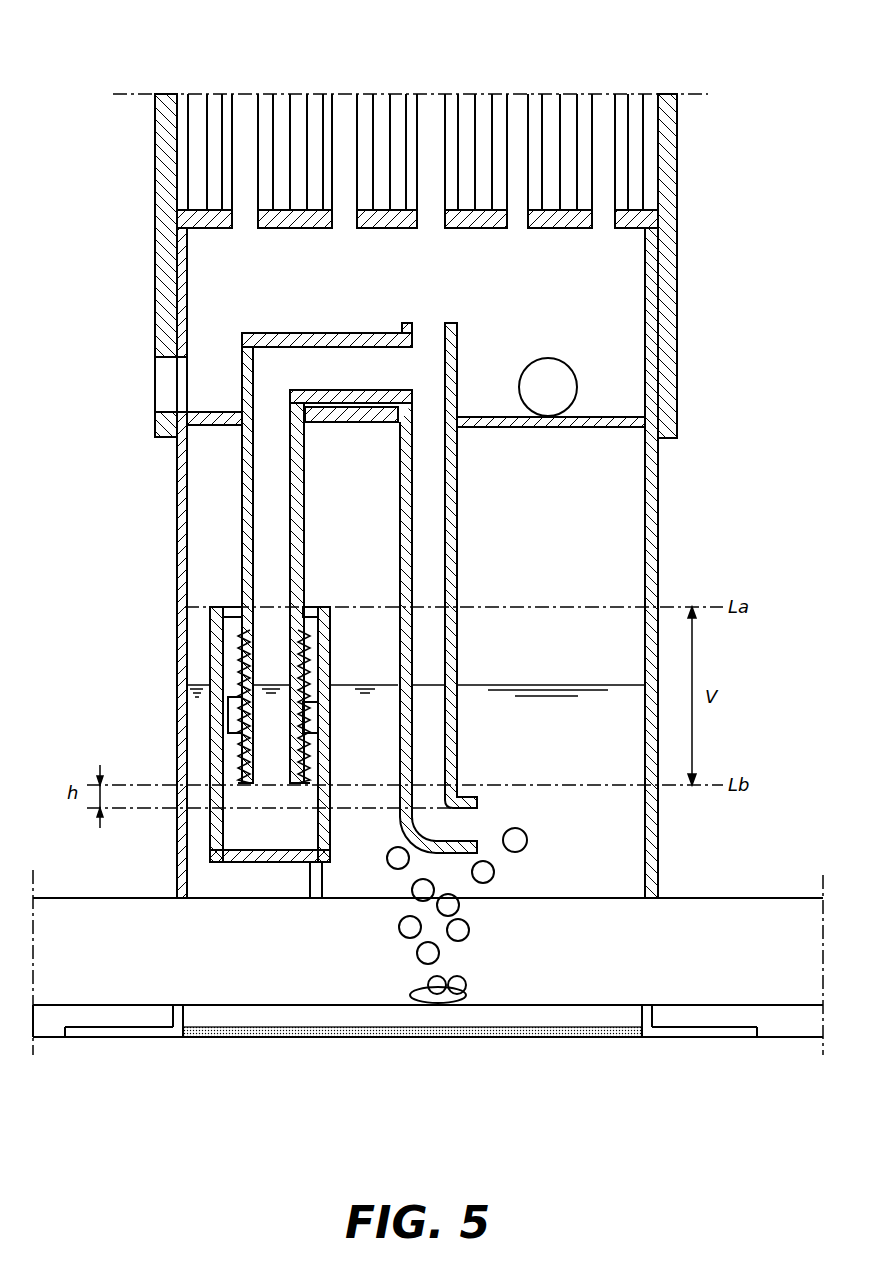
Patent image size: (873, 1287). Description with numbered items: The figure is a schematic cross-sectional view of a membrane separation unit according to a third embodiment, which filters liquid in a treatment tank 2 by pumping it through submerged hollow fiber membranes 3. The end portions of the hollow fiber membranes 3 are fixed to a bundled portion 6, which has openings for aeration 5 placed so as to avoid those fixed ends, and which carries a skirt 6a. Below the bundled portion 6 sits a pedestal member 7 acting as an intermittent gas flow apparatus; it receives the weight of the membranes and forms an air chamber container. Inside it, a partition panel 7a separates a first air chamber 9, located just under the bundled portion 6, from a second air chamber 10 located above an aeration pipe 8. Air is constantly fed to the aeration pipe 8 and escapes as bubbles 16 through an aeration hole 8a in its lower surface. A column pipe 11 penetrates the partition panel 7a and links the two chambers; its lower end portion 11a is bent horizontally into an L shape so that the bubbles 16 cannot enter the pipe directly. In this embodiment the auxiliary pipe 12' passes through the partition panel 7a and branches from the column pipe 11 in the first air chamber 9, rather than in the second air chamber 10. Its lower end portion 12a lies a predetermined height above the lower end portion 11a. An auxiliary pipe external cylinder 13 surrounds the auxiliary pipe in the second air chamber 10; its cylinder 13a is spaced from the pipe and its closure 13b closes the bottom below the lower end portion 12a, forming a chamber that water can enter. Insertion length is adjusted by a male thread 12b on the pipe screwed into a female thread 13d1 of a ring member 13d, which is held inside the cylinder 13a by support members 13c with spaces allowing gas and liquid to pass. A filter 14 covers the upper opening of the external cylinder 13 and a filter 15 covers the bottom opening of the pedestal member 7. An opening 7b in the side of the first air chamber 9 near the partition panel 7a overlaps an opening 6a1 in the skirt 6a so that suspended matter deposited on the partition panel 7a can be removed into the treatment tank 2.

The treatment tank 2 is at (803, 542).
The hollow fiber membranes 3 is at (486, 100).
The openings for aeration 5 is at (430, 100).
The bundled portion 6 is at (404, 266).
The skirt 6a is at (678, 356).
The opening 6a1 is at (160, 383).
The pedestal member 7 is at (460, 563).
The partition panel 7a is at (505, 428).
The opening 7b is at (187, 371).
The aeration pipe 8 is at (428, 1000).
The aeration hole 8a is at (437, 1040).
The first air chamber 9 is at (332, 316).
The second air chamber 10 is at (574, 504).
The column pipe 11 is at (507, 570).
The lower end portion of column pipe 11a is at (480, 800).
The auxiliary pipe 12' is at (279, 628).
The lower end portion of auxiliary pipe 12a is at (250, 785).
The male thread 12b is at (240, 668).
The auxiliary pipe external cylinder 13 is at (247, 768).
The cylinder 13a is at (333, 608).
The closure 13b is at (322, 898).
The support member 13c is at (333, 745).
The ring member 13d is at (318, 708).
The female thread 13d1 is at (300, 735).
The filter 14 is at (230, 607).
The filter 15 is at (598, 1040).
The bubbles 16 is at (528, 850).